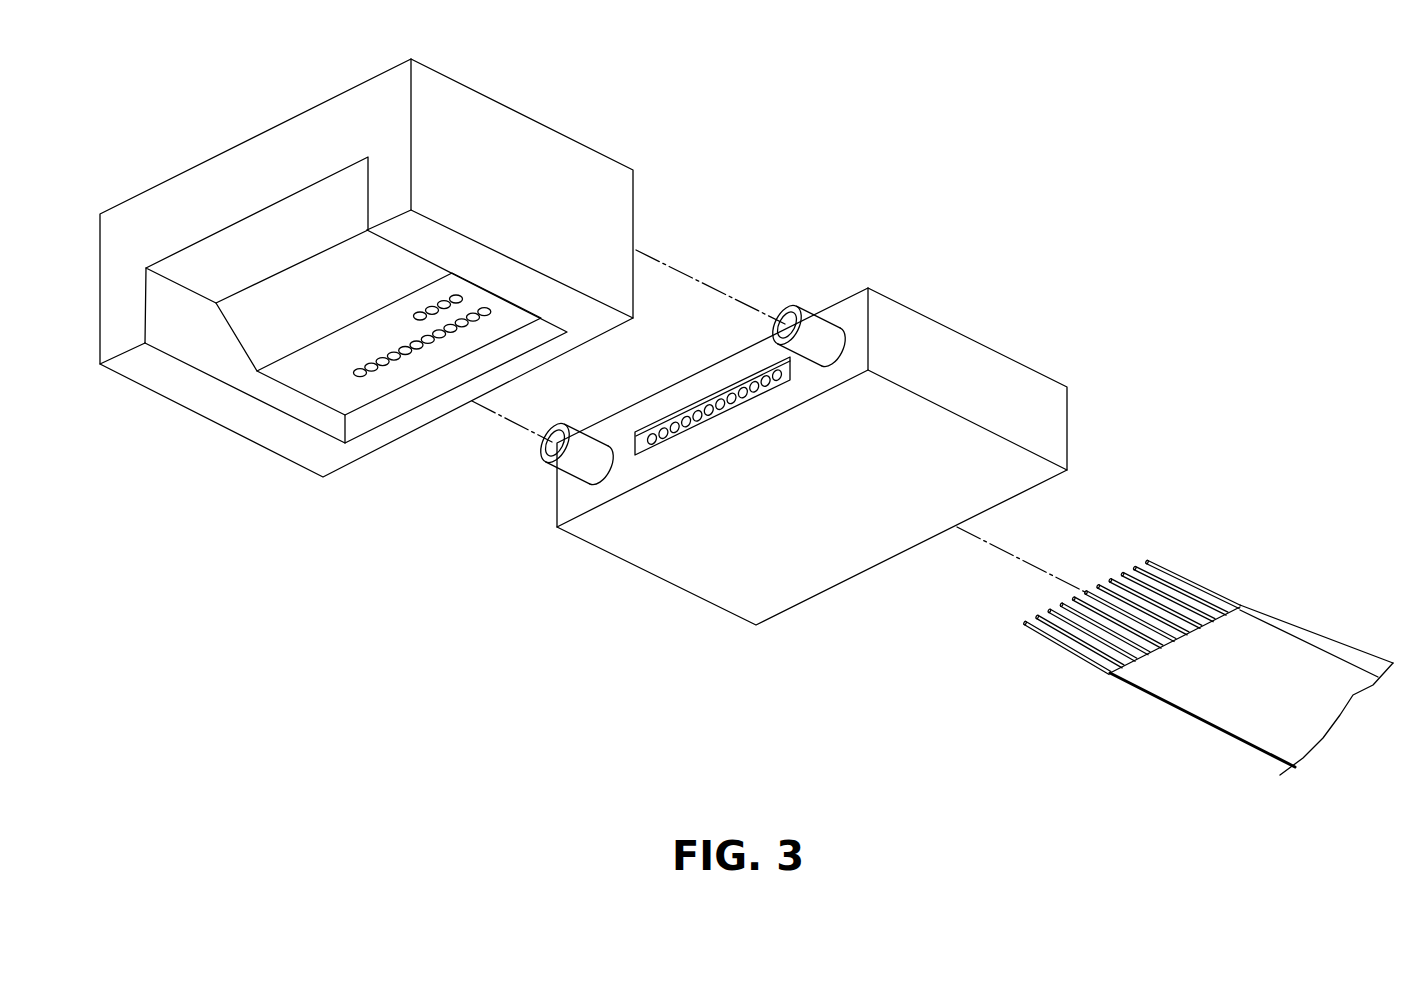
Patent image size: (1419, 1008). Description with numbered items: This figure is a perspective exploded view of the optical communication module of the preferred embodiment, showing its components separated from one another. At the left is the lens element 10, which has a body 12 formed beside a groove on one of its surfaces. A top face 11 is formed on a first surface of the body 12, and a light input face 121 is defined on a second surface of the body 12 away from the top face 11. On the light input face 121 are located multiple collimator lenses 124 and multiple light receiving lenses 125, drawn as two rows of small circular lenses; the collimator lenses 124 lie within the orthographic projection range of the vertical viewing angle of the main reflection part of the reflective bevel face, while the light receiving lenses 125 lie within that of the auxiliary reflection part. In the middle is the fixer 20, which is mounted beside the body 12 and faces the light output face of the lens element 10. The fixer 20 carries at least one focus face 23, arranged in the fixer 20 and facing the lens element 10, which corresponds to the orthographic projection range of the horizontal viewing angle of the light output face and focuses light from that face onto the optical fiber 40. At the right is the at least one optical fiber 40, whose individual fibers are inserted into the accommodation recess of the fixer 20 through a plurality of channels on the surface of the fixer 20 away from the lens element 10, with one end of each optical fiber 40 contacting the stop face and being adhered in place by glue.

The lens element 10 is at (528, 152).
The top face 11 is at (268, 233).
The body 12 is at (347, 388).
The light input face 121 is at (302, 380).
The collimator lenses 124 is at (450, 332).
The light receiving lenses 125 is at (420, 319).
The fixer 20 is at (968, 362).
The focus face 23 is at (718, 402).
The optical fiber 40 is at (1270, 648).